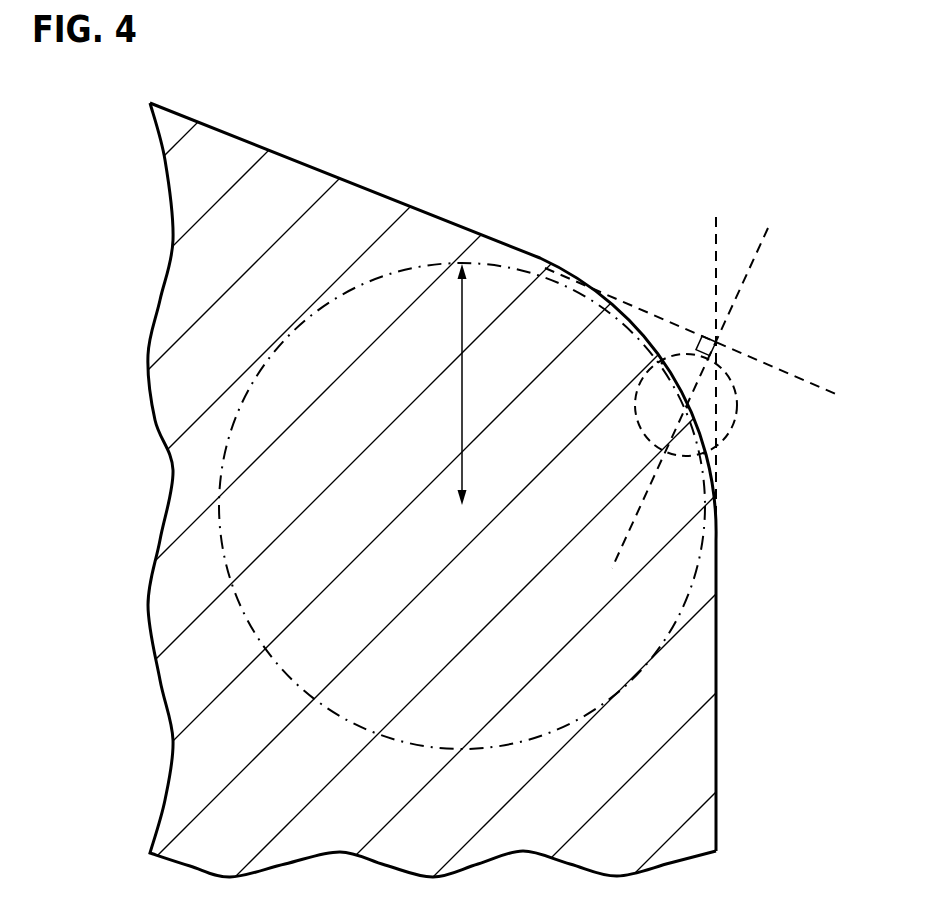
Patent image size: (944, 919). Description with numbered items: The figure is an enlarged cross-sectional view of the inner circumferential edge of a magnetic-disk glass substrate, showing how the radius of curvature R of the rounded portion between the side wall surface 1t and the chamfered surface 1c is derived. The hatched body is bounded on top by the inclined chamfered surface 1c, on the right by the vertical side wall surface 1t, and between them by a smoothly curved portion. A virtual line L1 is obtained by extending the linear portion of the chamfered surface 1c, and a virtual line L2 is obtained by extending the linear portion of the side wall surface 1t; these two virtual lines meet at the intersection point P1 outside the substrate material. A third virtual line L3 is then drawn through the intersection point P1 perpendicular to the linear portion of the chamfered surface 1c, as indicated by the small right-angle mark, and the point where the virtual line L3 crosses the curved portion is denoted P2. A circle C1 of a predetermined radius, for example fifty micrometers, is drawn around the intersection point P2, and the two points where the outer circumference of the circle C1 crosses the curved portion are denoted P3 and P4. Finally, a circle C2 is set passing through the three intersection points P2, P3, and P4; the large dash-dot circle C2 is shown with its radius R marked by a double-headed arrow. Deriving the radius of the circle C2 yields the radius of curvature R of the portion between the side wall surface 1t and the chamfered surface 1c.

The chamfered surface 1c is at (380, 192).
The side wall surface 1t is at (717, 648).
The circle C1 is at (740, 394).
The circle C2 is at (447, 262).
The virtual line L1 is at (817, 384).
The virtual line L2 is at (715, 235).
The virtual line L3 is at (757, 250).
The intersection point P1 is at (714, 330).
The intersection point P2 is at (687, 407).
The intersection point P3 is at (662, 363).
The intersection point P4 is at (704, 453).
The radius of curvature R is at (453, 384).